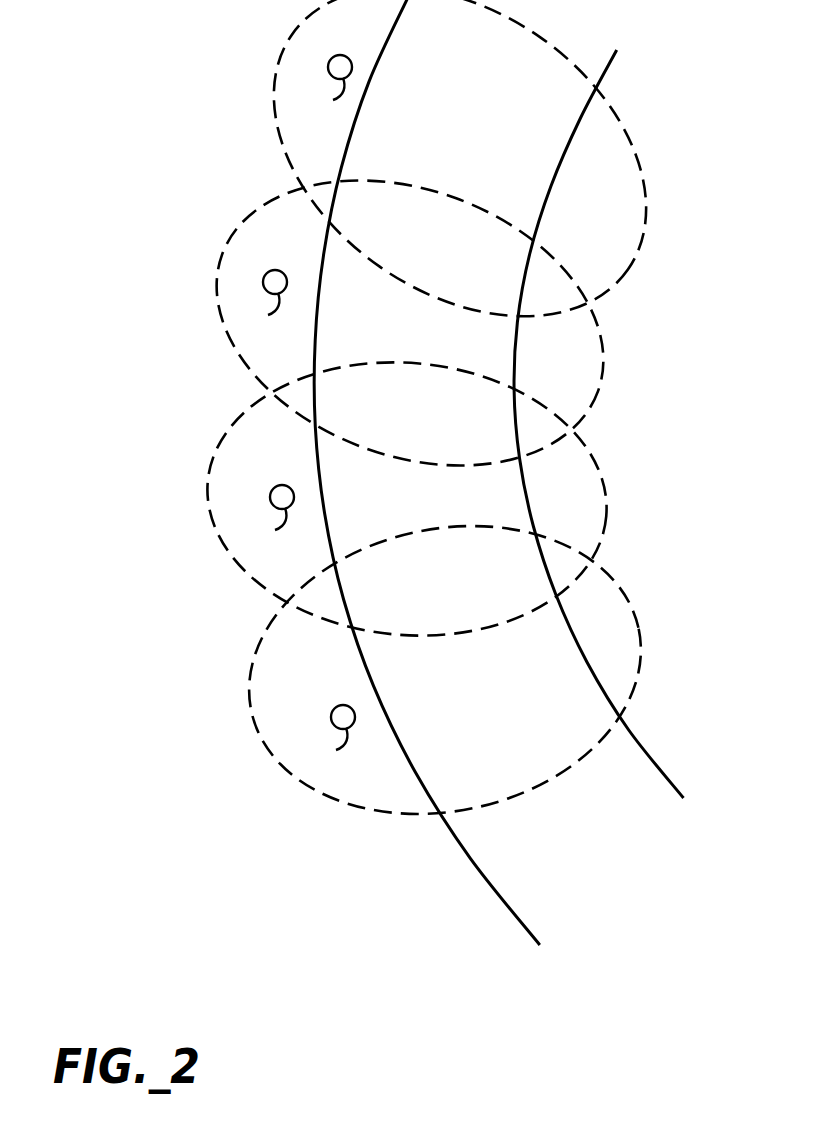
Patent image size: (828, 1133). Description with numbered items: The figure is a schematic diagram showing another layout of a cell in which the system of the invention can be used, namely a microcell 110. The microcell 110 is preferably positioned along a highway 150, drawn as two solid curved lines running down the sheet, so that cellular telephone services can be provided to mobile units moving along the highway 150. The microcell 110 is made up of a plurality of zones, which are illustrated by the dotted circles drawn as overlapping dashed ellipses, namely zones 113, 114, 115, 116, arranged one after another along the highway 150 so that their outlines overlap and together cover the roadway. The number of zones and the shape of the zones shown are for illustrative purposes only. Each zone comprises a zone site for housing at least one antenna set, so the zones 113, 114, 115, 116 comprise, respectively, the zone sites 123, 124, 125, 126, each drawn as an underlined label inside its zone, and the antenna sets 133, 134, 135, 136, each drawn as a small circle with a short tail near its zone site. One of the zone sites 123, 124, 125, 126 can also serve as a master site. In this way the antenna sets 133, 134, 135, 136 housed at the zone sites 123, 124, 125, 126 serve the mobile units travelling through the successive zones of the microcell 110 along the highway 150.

The microcell 110 is at (250, 852).
The zone 113 is at (645, 191).
The zone 114 is at (608, 355).
The zone 115 is at (605, 476).
The zone 116 is at (642, 619).
The zone site 123 is at (378, 44).
The zone site 124 is at (303, 252).
The zone site 125 is at (288, 464).
The zone site 126 is at (322, 664).
The antenna set 133 is at (317, 87).
The antenna set 134 is at (256, 299).
The antenna set 135 is at (263, 516).
The antenna set 136 is at (324, 737).
The highway 150 is at (648, 754).